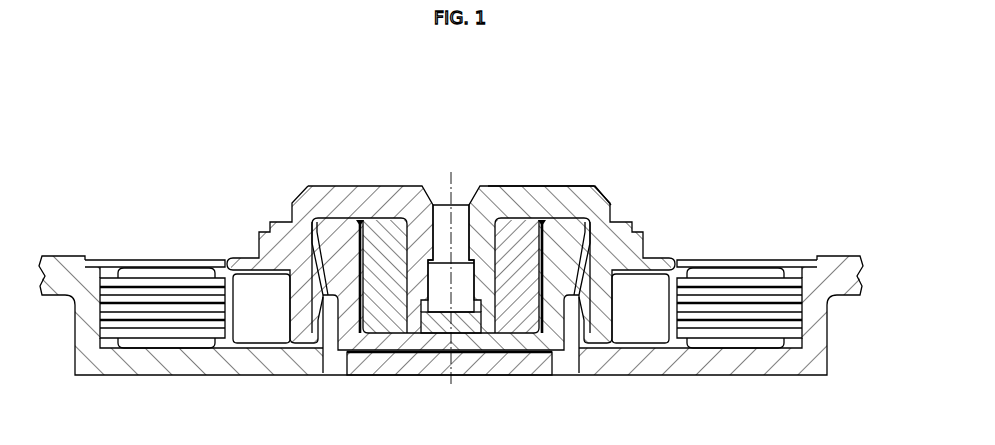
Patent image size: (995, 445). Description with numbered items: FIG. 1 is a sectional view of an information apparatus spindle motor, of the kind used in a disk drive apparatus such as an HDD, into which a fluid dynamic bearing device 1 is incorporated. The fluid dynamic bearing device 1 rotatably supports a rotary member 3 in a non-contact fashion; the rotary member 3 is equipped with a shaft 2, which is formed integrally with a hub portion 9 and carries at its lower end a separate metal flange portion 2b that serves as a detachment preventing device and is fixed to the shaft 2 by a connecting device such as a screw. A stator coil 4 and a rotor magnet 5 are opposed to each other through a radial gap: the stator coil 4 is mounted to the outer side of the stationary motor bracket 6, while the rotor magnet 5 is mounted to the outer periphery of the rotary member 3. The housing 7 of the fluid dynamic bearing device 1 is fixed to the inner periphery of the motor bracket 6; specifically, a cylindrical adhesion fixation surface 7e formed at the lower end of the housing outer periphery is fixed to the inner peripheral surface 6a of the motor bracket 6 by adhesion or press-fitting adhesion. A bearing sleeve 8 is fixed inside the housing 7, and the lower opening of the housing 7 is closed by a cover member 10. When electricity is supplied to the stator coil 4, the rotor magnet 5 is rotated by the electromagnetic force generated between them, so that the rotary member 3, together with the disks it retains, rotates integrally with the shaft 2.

The fluid dynamic bearing device 1 is at (549, 164).
The shaft 2 is at (500, 255).
The flange portion 2b is at (515, 340).
The rotary member 3 is at (353, 182).
The stator coil 4 is at (782, 280).
The rotor magnet 5 is at (649, 283).
The motor bracket 6 is at (163, 365).
The inner peripheral surface 6a is at (343, 358).
The housing 7 is at (320, 285).
The adhesion fixation surface 7e is at (325, 300).
The bearing sleeve 8 is at (528, 316).
The hub portion 9 is at (580, 183).
The cover member 10 is at (432, 362).